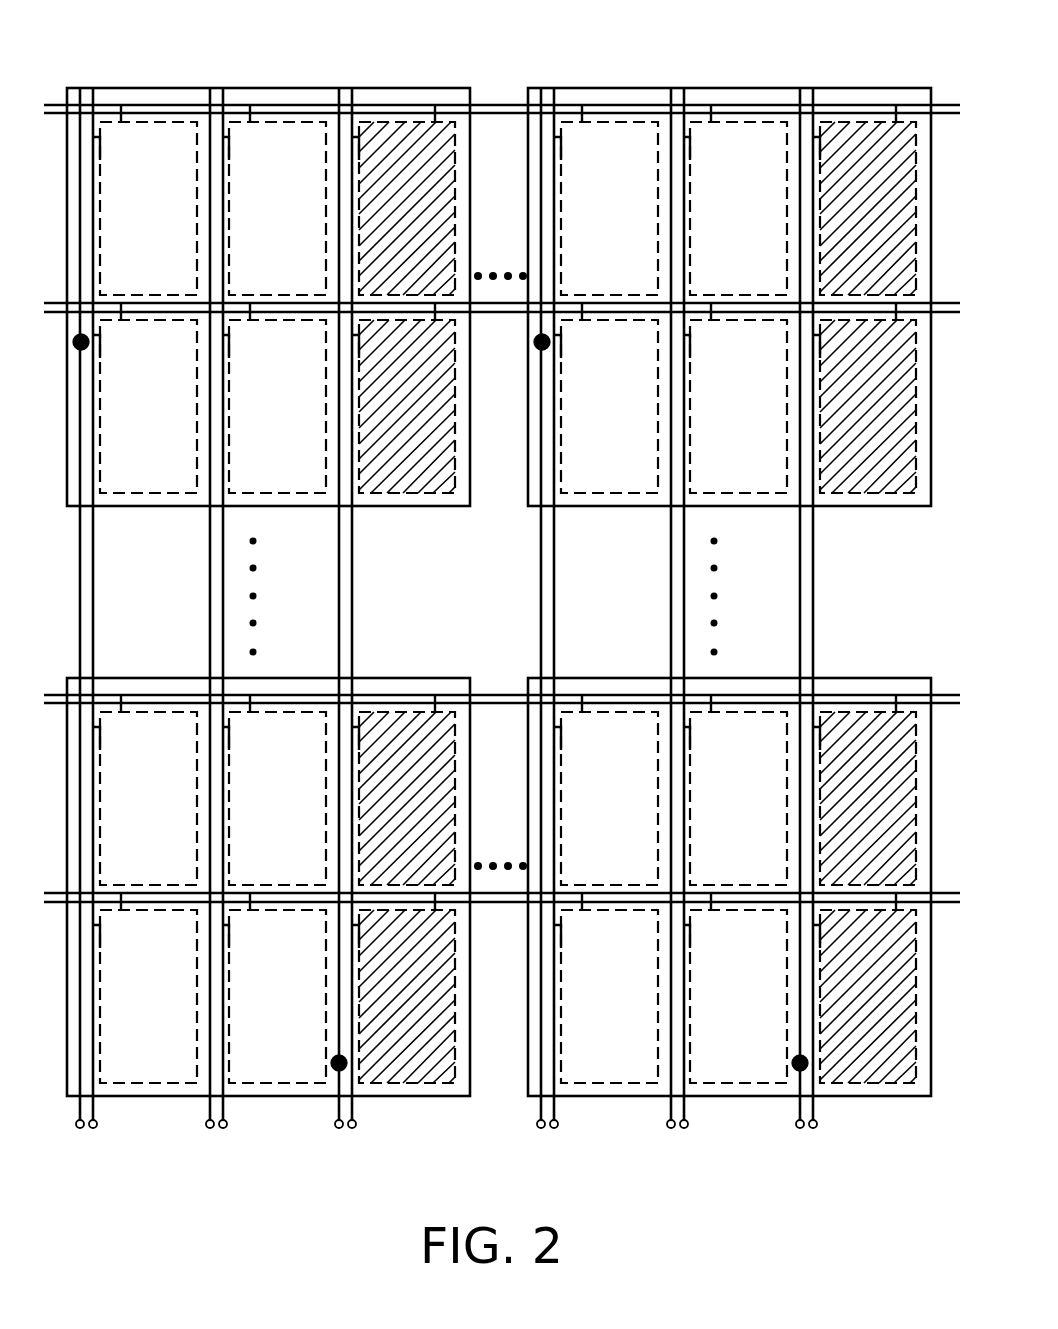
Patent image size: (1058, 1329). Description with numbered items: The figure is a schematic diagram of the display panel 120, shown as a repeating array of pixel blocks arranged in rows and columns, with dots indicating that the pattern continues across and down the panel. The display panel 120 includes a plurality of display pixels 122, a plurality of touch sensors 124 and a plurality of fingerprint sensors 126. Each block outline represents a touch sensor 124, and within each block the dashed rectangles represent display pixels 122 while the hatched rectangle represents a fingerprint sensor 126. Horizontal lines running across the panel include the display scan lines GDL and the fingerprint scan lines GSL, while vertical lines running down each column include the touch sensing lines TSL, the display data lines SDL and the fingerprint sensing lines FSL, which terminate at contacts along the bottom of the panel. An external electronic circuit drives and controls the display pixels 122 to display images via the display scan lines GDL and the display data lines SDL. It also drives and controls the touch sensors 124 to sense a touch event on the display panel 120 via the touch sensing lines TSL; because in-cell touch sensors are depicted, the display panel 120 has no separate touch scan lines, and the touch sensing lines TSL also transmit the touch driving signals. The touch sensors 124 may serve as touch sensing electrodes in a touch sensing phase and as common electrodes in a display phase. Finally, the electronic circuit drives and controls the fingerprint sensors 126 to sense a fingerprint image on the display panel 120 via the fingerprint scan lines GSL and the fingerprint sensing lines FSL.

The display panel 120 is at (937, 1183).
The display pixels 122 is at (184, 122).
The touch sensors 124 is at (140, 88).
The fingerprint sensors 126 is at (447, 122).
The touch sensing lines TSL is at (81, 102).
The display data lines SDL is at (222, 98).
The fingerprint sensing lines FSL is at (352, 97).
The display scan lines GDL is at (488, 105).
The fingerprint scan lines GSL is at (507, 113).